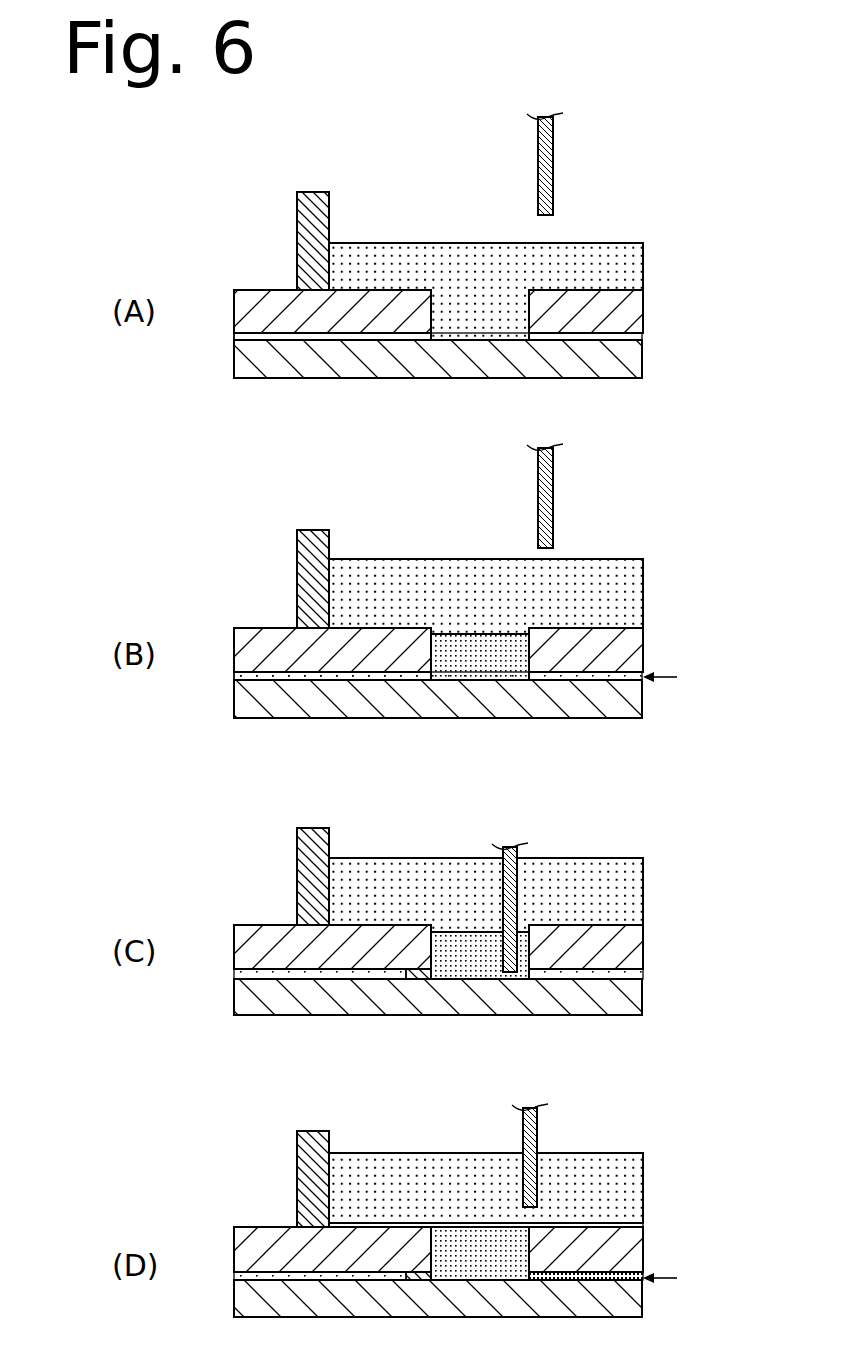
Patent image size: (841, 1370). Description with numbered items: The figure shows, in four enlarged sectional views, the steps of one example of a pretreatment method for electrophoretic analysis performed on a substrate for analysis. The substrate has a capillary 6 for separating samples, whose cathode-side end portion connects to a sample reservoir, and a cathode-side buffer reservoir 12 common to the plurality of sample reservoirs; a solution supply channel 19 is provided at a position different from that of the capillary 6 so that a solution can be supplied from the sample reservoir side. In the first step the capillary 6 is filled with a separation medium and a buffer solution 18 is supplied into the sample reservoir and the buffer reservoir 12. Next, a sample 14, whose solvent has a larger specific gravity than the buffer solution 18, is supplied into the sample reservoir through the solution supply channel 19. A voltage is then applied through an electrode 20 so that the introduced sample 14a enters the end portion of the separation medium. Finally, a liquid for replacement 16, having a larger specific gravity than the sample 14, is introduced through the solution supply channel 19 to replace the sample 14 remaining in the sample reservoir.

The capillary 6 is at (283, 338).
The cathode-side buffer reservoir 12 is at (618, 228).
The sample 14 is at (473, 648).
The introduced sample 14a is at (423, 973).
The liquid for replacement 16 is at (495, 1227).
The buffer solution 18 is at (446, 258).
The solution supply channel 19 is at (605, 338).
The electrode 20 is at (553, 147).